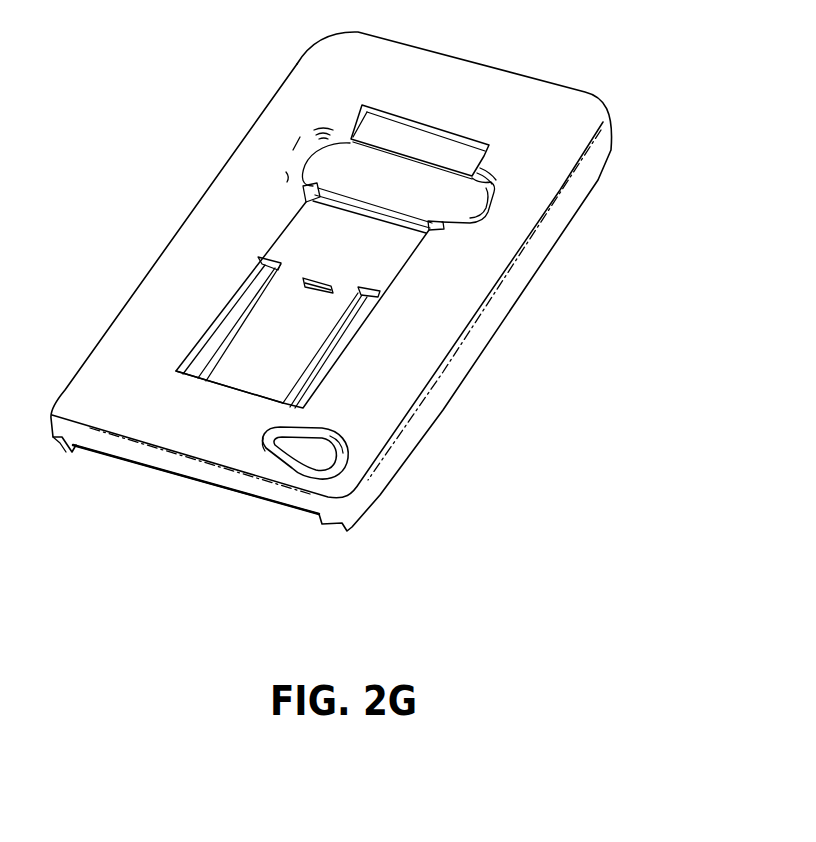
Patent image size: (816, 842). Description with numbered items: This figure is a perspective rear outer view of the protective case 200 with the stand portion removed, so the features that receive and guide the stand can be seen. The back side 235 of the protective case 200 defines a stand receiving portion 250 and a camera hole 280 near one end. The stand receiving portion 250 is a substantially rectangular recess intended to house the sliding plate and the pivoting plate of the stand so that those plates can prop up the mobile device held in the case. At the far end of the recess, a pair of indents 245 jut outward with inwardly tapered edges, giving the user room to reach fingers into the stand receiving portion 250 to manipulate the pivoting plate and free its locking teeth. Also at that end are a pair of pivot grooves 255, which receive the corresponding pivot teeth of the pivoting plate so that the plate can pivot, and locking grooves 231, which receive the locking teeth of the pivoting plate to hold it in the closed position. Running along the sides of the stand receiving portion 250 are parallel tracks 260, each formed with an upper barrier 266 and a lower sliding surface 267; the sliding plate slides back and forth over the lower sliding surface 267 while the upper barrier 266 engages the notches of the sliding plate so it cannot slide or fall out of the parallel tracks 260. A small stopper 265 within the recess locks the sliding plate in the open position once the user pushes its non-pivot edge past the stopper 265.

The protective case 200 is at (620, 136).
The back side 235 is at (311, 78).
The indents 245 is at (331, 157).
The pivot grooves 255 is at (366, 110).
The locking grooves 231 is at (300, 194).
The stand receiving portion 250 is at (411, 263).
The parallel tracks 260 is at (218, 332).
The stopper 265 is at (318, 277).
The upper barrier 266 is at (262, 300).
The lower sliding surface 267 is at (253, 364).
The camera hole 280 is at (307, 467).